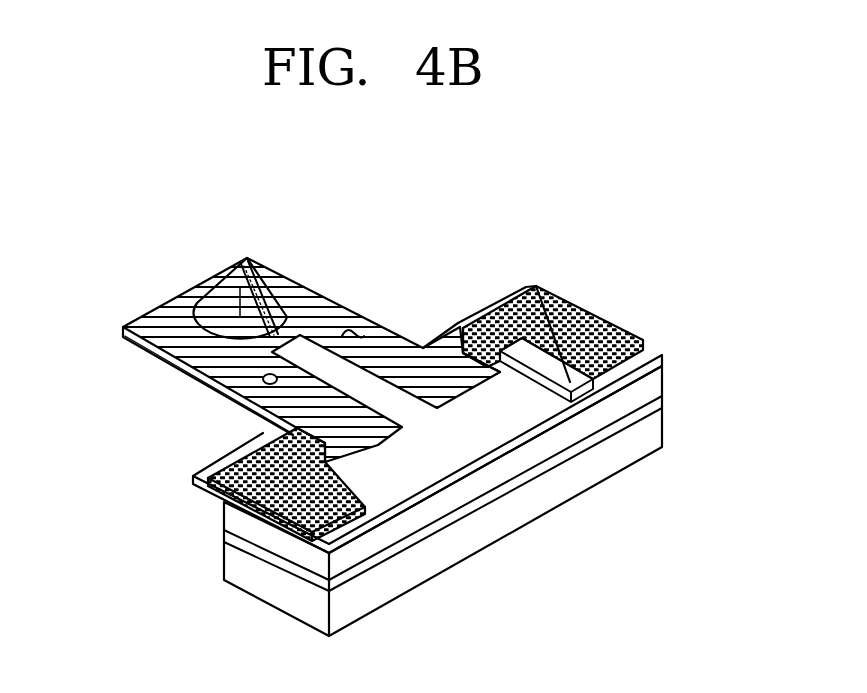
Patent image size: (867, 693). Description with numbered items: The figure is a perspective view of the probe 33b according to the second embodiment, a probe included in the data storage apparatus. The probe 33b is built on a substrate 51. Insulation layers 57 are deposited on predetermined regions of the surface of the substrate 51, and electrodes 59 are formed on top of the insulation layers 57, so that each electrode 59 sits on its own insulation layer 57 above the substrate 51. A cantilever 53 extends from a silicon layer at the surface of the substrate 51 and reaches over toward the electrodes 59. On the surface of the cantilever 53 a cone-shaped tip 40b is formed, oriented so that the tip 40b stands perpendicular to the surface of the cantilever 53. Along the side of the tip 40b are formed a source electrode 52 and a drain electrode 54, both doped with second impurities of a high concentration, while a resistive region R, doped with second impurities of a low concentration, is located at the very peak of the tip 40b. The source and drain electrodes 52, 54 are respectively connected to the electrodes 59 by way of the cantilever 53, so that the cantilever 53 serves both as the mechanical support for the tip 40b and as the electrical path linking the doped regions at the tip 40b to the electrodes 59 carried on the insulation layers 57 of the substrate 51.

The probe 33b is at (167, 485).
The substrate 51 is at (665, 356).
The source electrode 52 is at (327, 310).
The cantilever 53 is at (183, 370).
The drain electrode 54 is at (170, 320).
The insulation layer 57 is at (645, 358).
The electrode 59 is at (583, 313).
The tip 40b is at (282, 282).
The resistive region R is at (247, 258).